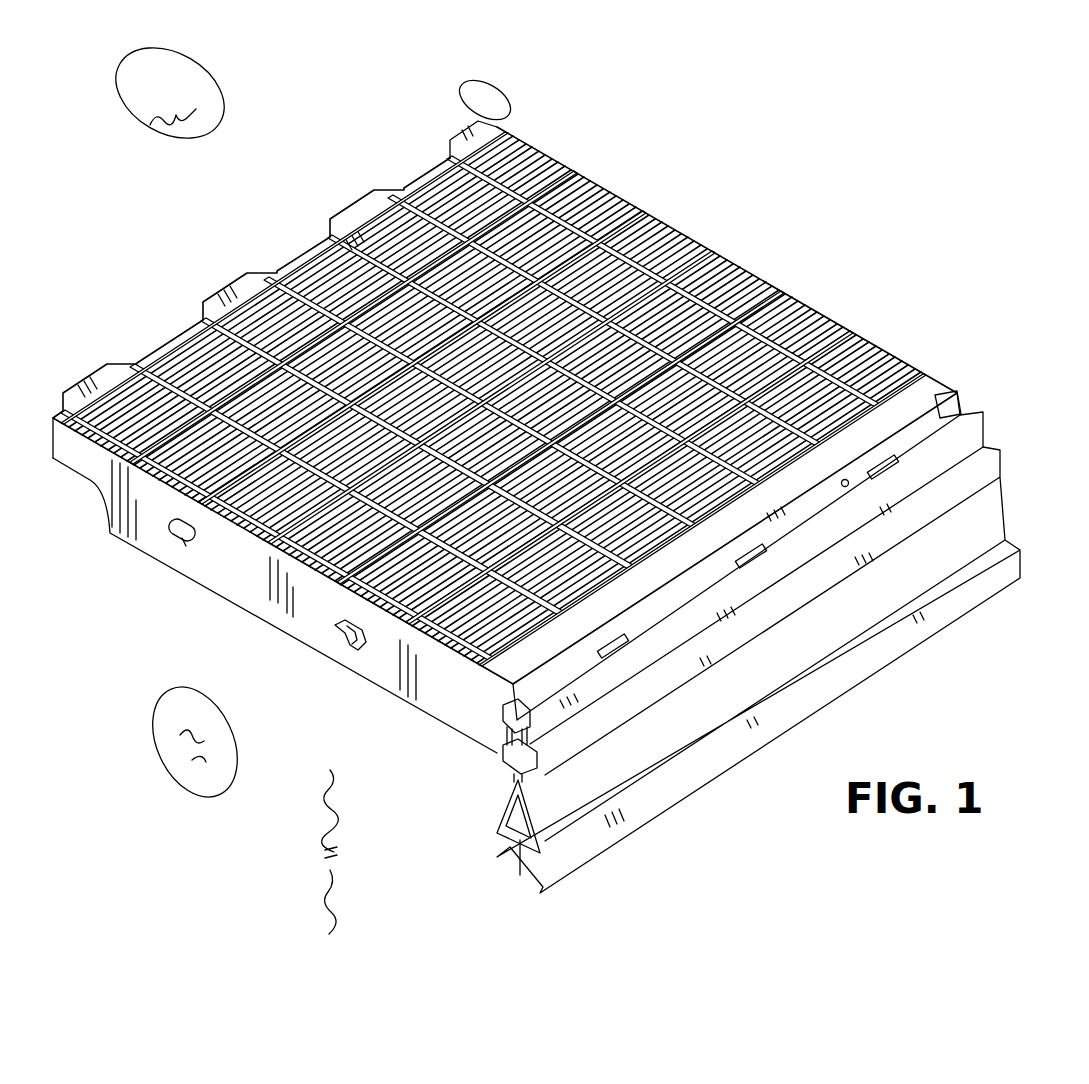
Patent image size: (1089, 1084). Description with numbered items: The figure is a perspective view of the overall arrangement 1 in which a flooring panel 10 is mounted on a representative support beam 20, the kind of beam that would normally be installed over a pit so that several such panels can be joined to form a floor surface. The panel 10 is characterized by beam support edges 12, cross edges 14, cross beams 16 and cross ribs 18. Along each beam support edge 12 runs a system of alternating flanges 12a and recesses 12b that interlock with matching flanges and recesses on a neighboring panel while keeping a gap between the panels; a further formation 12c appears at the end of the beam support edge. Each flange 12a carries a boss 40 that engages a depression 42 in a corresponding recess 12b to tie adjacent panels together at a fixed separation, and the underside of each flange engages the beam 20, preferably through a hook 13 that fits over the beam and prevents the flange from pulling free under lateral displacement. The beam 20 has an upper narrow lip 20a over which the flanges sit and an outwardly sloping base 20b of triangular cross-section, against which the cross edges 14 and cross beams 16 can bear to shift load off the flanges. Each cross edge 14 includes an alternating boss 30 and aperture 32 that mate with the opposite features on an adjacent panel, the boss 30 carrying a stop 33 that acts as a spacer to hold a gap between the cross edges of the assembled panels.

The storage rack assembly 1 is at (818, 183).
The flooring panel 10 is at (503, 396).
The beam support edges 12 is at (486, 369).
The flanges 12a is at (360, 194).
The recesses 12b is at (313, 243).
The end tab 12c is at (463, 135).
The hook 13 is at (970, 437).
The cross edges 14 is at (666, 173).
The cross beams 16 is at (793, 300).
The cross ribs 18 is at (857, 340).
The support beam 20 is at (720, 668).
The upper narrow lip 20a is at (503, 740).
The outwardly sloping base 20b is at (505, 792).
The boss 30 is at (332, 688).
The aperture 32 is at (183, 547).
The stop 33 is at (383, 640).
The boss 40 is at (965, 410).
The depression 42 is at (845, 487).